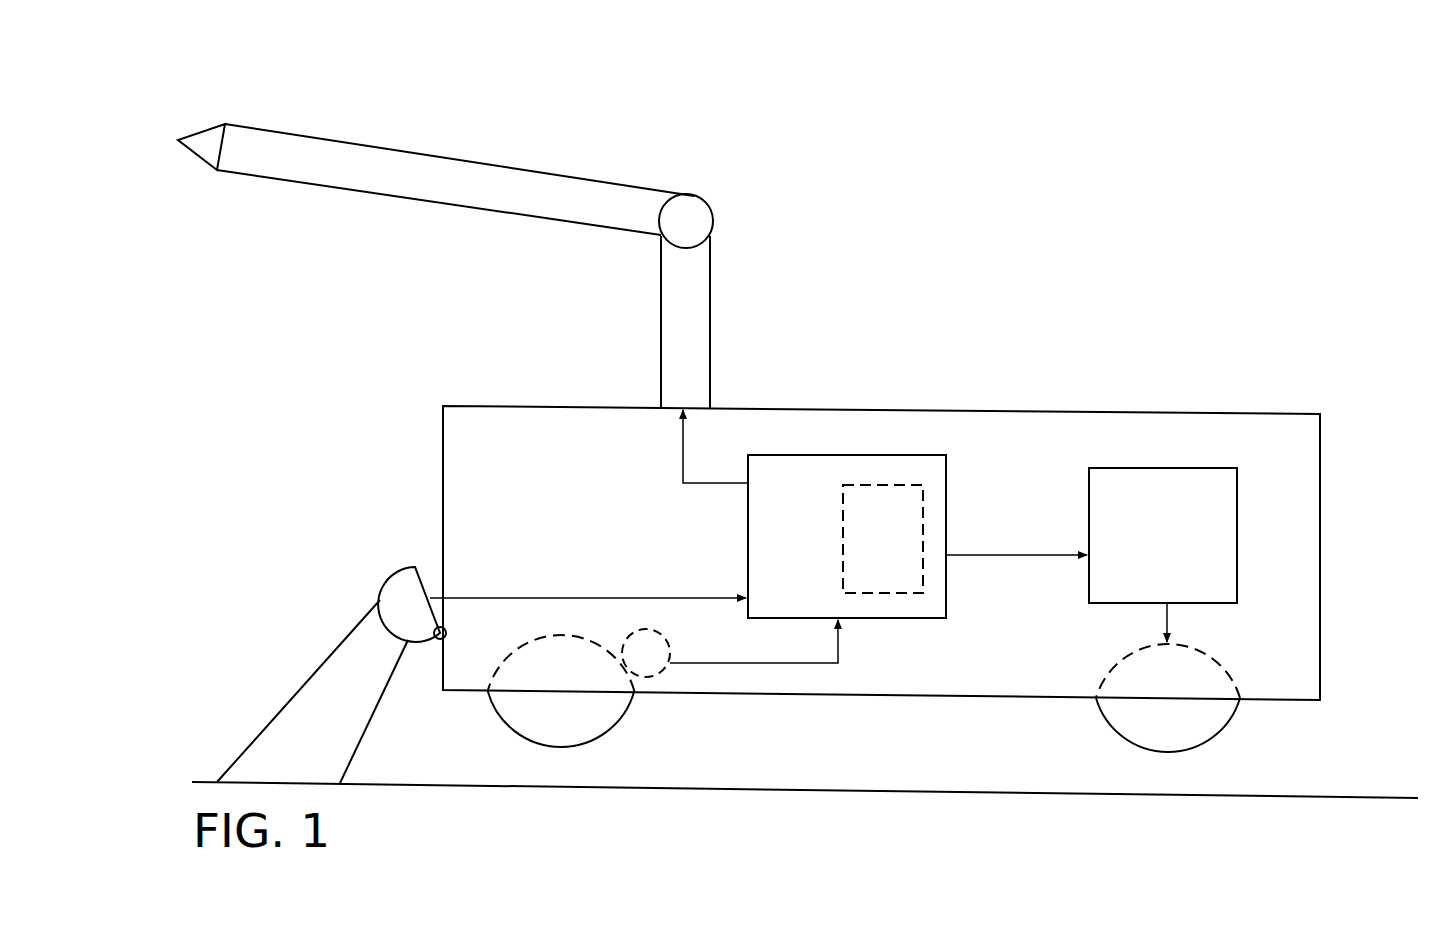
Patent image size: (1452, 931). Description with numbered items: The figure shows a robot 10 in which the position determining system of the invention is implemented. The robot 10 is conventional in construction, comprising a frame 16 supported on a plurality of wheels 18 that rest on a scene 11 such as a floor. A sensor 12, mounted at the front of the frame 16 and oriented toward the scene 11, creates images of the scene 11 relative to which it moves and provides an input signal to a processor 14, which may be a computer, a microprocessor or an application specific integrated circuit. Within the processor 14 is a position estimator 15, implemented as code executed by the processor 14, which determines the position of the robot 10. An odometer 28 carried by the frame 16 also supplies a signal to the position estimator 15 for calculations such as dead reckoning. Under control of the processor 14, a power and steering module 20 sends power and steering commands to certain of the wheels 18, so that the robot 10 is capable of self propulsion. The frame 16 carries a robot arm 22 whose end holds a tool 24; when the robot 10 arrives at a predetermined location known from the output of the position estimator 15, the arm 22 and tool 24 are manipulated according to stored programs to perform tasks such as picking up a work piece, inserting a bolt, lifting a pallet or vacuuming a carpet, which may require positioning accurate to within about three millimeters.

The robot 10 is at (1327, 446).
The scene 11 is at (1335, 795).
The sensor 12 is at (388, 578).
The processor 14 is at (748, 550).
The position estimator 15 is at (917, 508).
The frame 16 is at (1321, 572).
The wheels 18 is at (627, 757).
The power and steering module 20 is at (1237, 487).
The robot arm 22 is at (712, 313).
The tool 24 is at (200, 132).
The odometer 28 is at (662, 645).